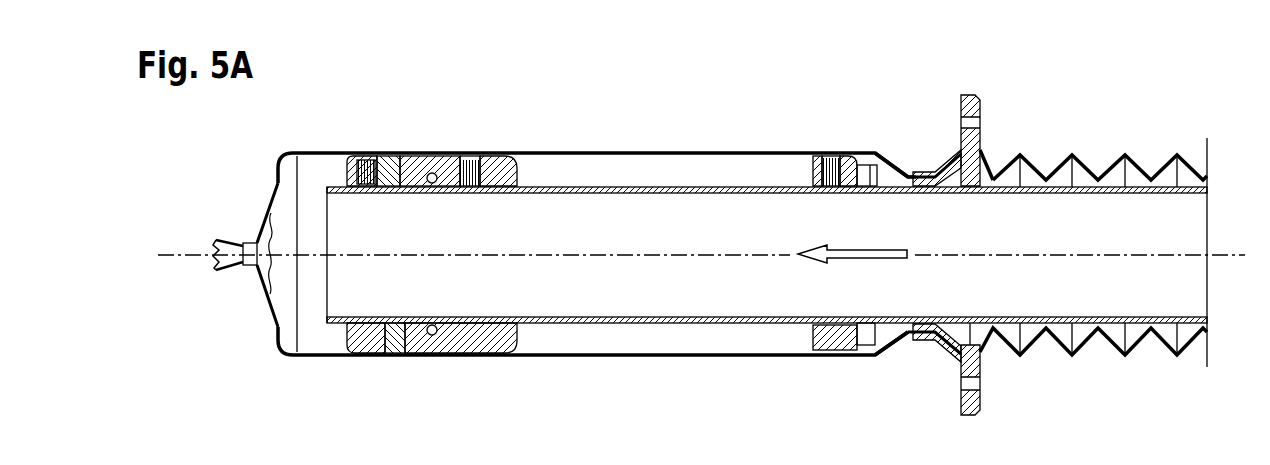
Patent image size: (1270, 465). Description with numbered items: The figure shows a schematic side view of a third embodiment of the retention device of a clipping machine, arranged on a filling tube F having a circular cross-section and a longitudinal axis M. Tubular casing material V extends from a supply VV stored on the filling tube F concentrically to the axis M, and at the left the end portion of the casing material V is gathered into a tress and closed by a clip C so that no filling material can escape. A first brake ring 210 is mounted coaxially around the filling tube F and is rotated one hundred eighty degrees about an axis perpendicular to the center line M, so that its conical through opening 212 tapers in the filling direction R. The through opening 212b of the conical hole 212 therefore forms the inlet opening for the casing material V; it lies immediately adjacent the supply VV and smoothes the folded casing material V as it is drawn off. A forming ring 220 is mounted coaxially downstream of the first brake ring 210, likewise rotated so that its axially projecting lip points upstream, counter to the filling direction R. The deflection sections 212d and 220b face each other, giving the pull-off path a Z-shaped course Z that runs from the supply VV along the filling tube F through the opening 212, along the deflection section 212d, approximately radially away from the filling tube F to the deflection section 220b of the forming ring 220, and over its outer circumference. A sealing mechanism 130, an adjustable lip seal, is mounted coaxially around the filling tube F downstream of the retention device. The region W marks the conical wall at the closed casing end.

The sealing mechanism 130 is at (429, 151).
The forming ring 220 is at (843, 153).
The deflection section 220b is at (873, 357).
The first brake ring 210 is at (975, 93).
The conical through opening 212 is at (935, 163).
The through opening 212b is at (981, 152).
The deflection section 212d is at (914, 337).
The longitudinal axis M is at (165, 250).
The conical wall W is at (272, 186).
The clip C is at (248, 268).
The tubular casing material V is at (602, 152).
The filling tube F is at (676, 186).
The Z-shaped course Z is at (895, 168).
The filling direction R is at (852, 242).
The supply VV is at (1125, 155).